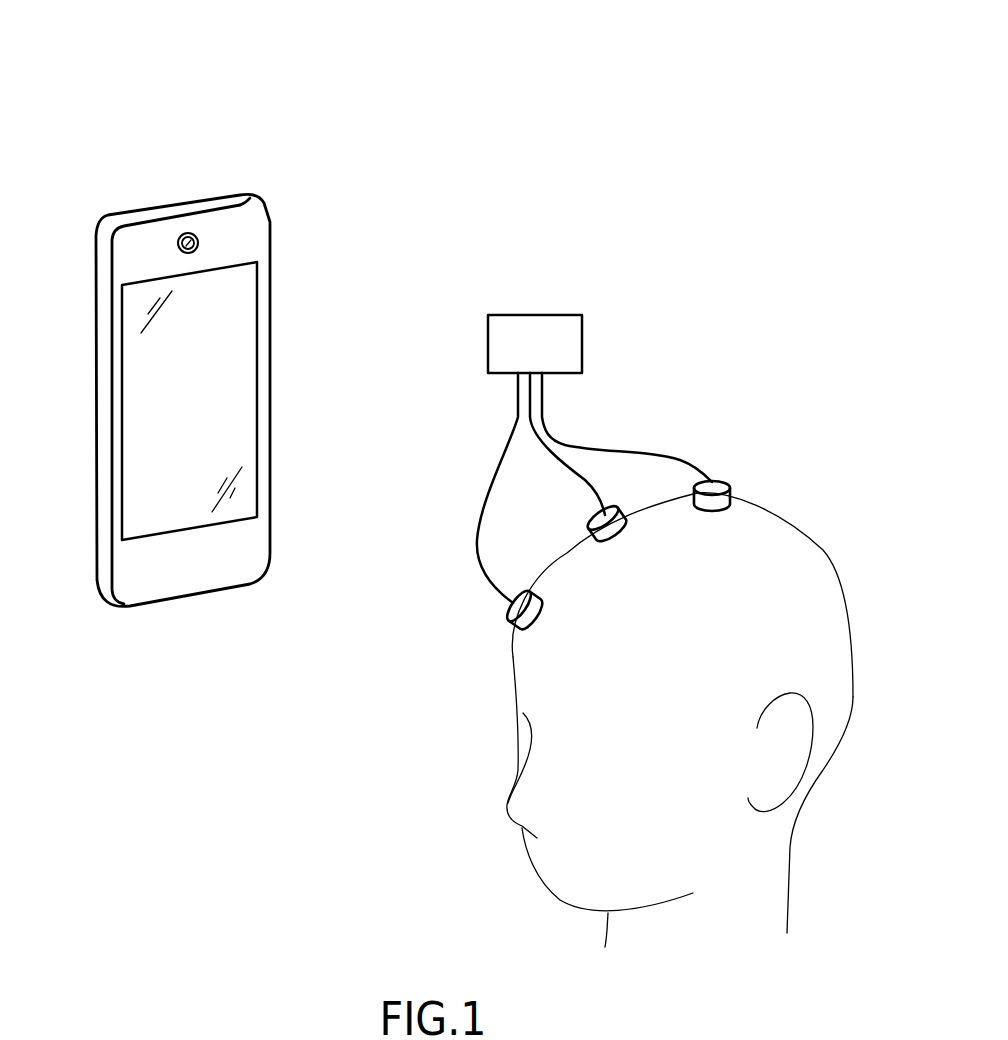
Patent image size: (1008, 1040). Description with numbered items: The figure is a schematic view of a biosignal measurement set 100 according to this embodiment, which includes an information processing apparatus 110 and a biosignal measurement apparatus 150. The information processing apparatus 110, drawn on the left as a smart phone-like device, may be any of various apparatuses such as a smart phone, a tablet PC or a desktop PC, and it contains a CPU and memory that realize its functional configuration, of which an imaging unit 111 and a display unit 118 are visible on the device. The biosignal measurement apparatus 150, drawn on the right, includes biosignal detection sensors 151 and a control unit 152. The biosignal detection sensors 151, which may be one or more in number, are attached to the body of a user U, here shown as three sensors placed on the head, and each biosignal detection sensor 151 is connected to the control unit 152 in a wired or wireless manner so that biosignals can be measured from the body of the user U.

The biosignal measurement set 100 is at (552, 96).
The information processing apparatus 110 is at (299, 197).
The imaging unit 111 is at (192, 233).
The display unit 118 is at (260, 330).
The biosignal measurement apparatus 150 is at (617, 284).
The biosignal detection sensor 151 is at (717, 481).
The control unit 152 is at (572, 345).
The user U is at (787, 523).